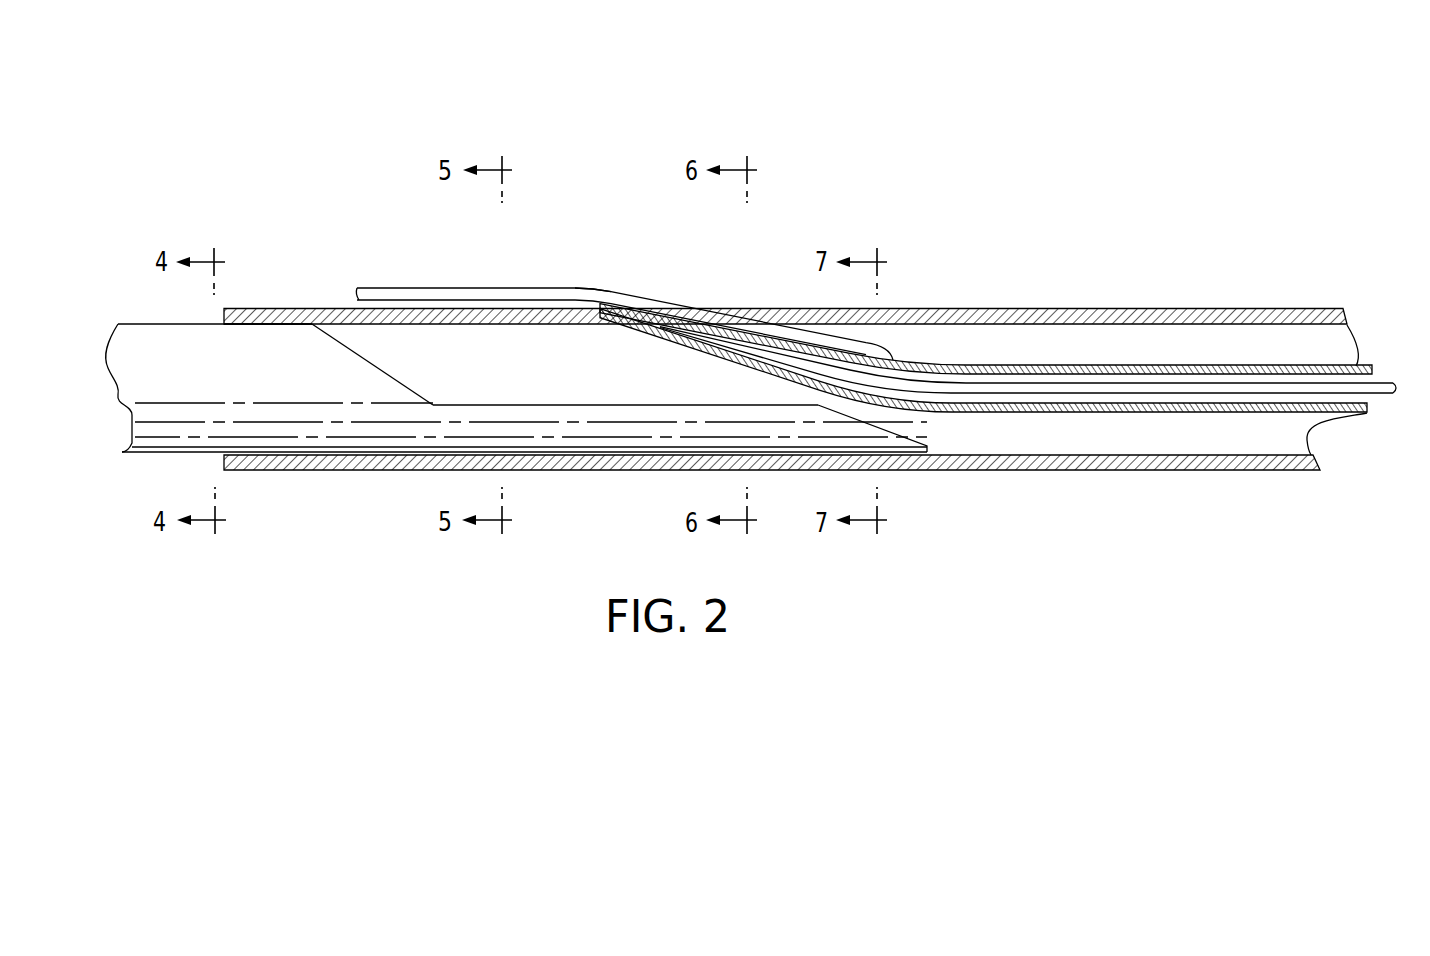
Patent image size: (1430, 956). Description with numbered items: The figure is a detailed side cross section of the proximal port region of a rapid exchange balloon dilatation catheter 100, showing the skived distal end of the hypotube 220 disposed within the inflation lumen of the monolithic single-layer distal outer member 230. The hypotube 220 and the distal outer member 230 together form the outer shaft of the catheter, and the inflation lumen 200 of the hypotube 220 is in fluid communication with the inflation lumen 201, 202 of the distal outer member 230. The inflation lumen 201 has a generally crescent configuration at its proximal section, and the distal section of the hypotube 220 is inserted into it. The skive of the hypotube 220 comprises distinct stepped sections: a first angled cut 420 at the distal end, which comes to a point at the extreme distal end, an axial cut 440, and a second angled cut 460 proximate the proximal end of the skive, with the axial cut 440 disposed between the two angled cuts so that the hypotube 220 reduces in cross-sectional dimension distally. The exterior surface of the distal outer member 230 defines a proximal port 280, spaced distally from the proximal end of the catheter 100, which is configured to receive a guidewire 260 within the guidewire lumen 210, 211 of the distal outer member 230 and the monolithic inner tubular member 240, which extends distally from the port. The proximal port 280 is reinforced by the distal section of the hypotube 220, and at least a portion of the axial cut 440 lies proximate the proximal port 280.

The balloon catheter 100 is at (347, 191).
The inflation lumen of the hypotube 200 is at (114, 383).
The inflation lumen of the distal outer member 201 is at (576, 348).
The inflation lumen of the distal outer member 202 is at (1210, 354).
The guidewire lumen 210 is at (675, 294).
The guidewire lumen 211 is at (1391, 369).
The hypotube 220 is at (142, 334).
The monolithic single-layer distal outer member 230 is at (1238, 471).
The monolithic inner tubular member 240 is at (1241, 365).
The guidewire 260 is at (598, 287).
The proximal port 280 is at (659, 246).
The first angled cut 420 is at (912, 447).
The axial cut 440 is at (642, 406).
The second angled cut 460 is at (408, 369).